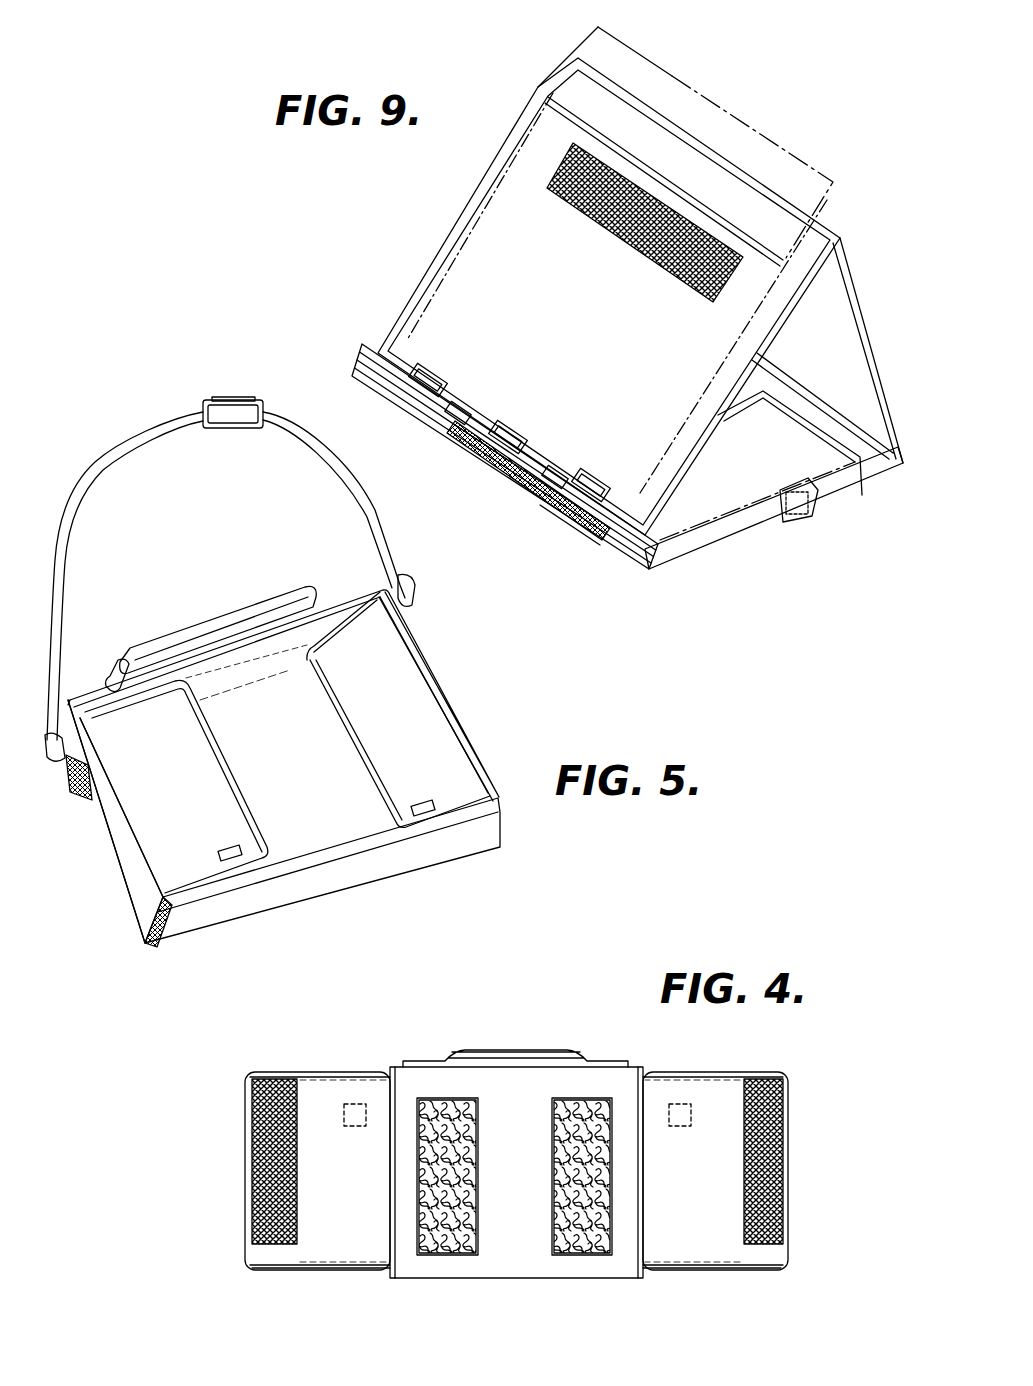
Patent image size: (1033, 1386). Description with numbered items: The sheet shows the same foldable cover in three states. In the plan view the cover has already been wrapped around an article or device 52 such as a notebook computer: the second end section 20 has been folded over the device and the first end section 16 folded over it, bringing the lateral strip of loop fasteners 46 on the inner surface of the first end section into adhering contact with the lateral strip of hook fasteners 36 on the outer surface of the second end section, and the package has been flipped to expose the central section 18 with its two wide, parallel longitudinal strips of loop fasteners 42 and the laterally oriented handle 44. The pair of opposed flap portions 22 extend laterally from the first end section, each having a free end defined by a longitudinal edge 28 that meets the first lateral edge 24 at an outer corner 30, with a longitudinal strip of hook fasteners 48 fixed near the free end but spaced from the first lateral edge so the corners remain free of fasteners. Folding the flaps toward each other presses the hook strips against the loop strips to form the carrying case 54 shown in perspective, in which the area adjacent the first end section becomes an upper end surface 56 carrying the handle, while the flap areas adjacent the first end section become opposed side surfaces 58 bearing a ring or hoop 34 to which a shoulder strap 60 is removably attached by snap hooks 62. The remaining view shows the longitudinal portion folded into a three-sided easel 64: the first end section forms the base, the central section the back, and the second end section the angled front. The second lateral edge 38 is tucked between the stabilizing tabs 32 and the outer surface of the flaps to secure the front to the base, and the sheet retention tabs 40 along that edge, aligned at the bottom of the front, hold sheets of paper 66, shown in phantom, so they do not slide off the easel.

In FIG. 9, the first end section 16 is at (648, 572).
In FIG. 9, the central section 18 is at (857, 298).
In FIG. 5, the central section 18 is at (283, 745).
In FIG. 4, the central section 18 is at (535, 1099).
In FIG. 9, the second end section 20 is at (683, 446).
In FIG. 9, the flap portions 22 is at (748, 480).
In FIG. 5, the flap portions 22 is at (195, 805).
In FIG. 4, the flap portions 22 is at (365, 1228).
In FIG. 9, the first lateral edge 24 is at (366, 386).
In FIG. 5, the longitudinal edge 28 is at (203, 693).
In FIG. 4, the longitudinal edge 28 is at (245, 1175).
In FIG. 4, the outer corner 30 is at (245, 1263).
In FIG. 9, the stabilizing tab 32 is at (468, 412).
In FIG. 5, the stabilizing tab 32 is at (232, 848).
In FIG. 9, the ring or hoop 34 is at (810, 515).
In FIG. 5, the ring or hoop 34 is at (72, 802).
In FIG. 9, the lateral strip of hook fasteners 36 is at (655, 263).
In FIG. 9, the second lateral edge 38 is at (472, 442).
In FIG. 9, the sheet retention tabs 40 is at (445, 385).
In FIG. 4, the longitudinal strips of loop fasteners 42 is at (552, 1160).
In FIG. 5, the handle 44 is at (222, 607).
In FIG. 4, the handle 44 is at (528, 1050).
In FIG. 9, the lateral strip of loop fasteners 46 is at (545, 506).
In FIG. 4, the longitudinal strip of hook fasteners 48 is at (298, 1165).
In FIG. 5, the article or device 52 is at (148, 948).
In FIG. 5, the carrying case 54 is at (478, 697).
In FIG. 5, the upper end surface 56 is at (80, 690).
In FIG. 5, the side surfaces 58 is at (125, 880).
In FIG. 5, the shoulder strap 60 is at (154, 412).
In FIG. 5, the snap hooks 62 is at (418, 600).
In FIG. 9, the easel 64 is at (430, 173).
In FIG. 9, the sheets of paper 66 is at (702, 95).